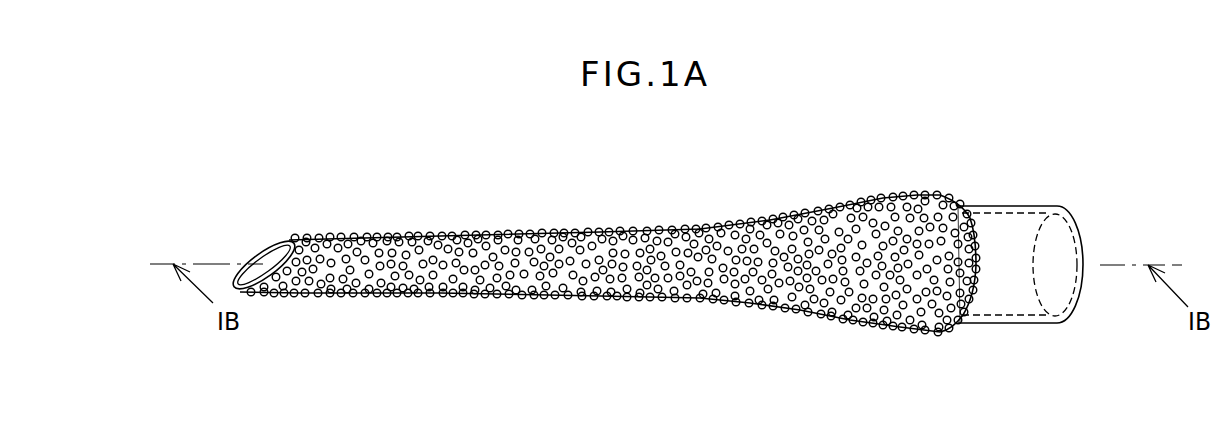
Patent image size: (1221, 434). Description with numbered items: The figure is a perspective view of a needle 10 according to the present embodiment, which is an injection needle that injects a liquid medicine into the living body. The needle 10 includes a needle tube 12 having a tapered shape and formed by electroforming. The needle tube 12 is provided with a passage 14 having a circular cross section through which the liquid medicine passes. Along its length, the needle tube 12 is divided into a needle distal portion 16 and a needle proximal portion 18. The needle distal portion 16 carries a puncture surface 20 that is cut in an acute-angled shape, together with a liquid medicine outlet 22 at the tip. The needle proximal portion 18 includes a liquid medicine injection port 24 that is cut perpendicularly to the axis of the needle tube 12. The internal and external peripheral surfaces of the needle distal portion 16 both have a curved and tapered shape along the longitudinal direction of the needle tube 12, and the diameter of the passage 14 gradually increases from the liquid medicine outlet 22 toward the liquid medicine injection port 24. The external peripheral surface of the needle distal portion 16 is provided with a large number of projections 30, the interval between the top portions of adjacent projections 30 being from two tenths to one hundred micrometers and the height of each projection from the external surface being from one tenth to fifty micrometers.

The needle 10 is at (895, 120).
The needle tube 12 is at (1000, 298).
The passage 14 is at (1018, 230).
The needle distal portion 16 is at (463, 196).
The needle proximal portion 18 is at (986, 178).
The puncture surface 20 is at (270, 258).
The liquid medicine outlet 22 is at (262, 249).
The liquid medicine injection port 24 is at (1078, 243).
The projections 30 is at (667, 230).